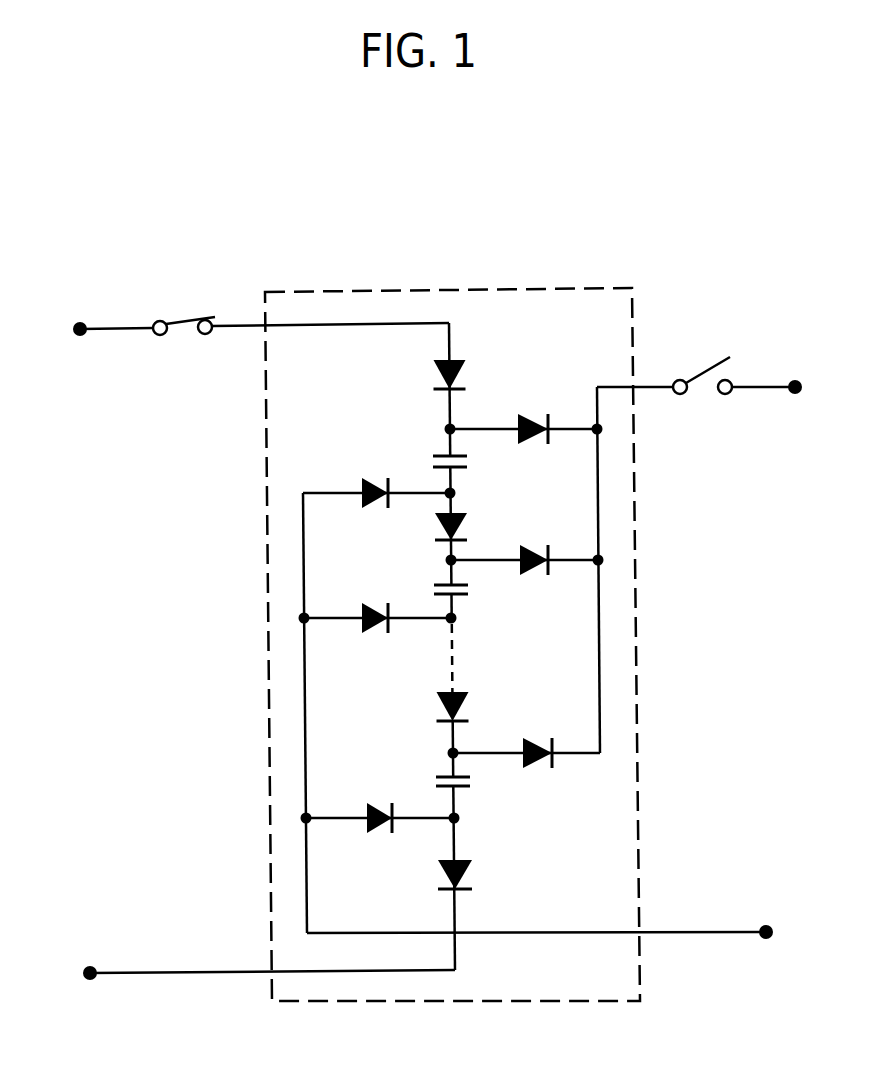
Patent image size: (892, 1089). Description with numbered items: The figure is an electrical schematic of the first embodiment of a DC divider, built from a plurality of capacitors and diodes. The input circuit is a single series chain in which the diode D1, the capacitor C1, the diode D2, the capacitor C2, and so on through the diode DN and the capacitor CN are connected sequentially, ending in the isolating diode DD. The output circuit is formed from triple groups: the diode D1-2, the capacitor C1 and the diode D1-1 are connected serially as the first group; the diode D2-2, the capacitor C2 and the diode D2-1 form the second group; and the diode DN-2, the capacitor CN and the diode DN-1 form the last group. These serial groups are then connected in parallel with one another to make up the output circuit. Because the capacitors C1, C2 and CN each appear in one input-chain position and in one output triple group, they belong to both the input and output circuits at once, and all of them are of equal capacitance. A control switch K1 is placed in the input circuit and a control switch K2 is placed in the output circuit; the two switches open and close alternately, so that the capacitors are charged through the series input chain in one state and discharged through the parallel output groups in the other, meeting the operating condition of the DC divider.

The control switch K1 is at (147, 301).
The control switch K2 is at (696, 355).
The diode D1 is at (461, 353).
The diode D1-1 is at (533, 406).
The diode D1-2 is at (368, 471).
The capacitor C1 is at (466, 474).
The diode D2 is at (430, 533).
The diode D2-1 is at (542, 536).
The diode D2-2 is at (365, 598).
The capacitor C2 is at (472, 606).
The diode DN is at (474, 690).
The diode DN-1 is at (560, 774).
The diode DN-2 is at (372, 796).
The capacitor CN is at (471, 799).
The isolating diode DD is at (477, 885).